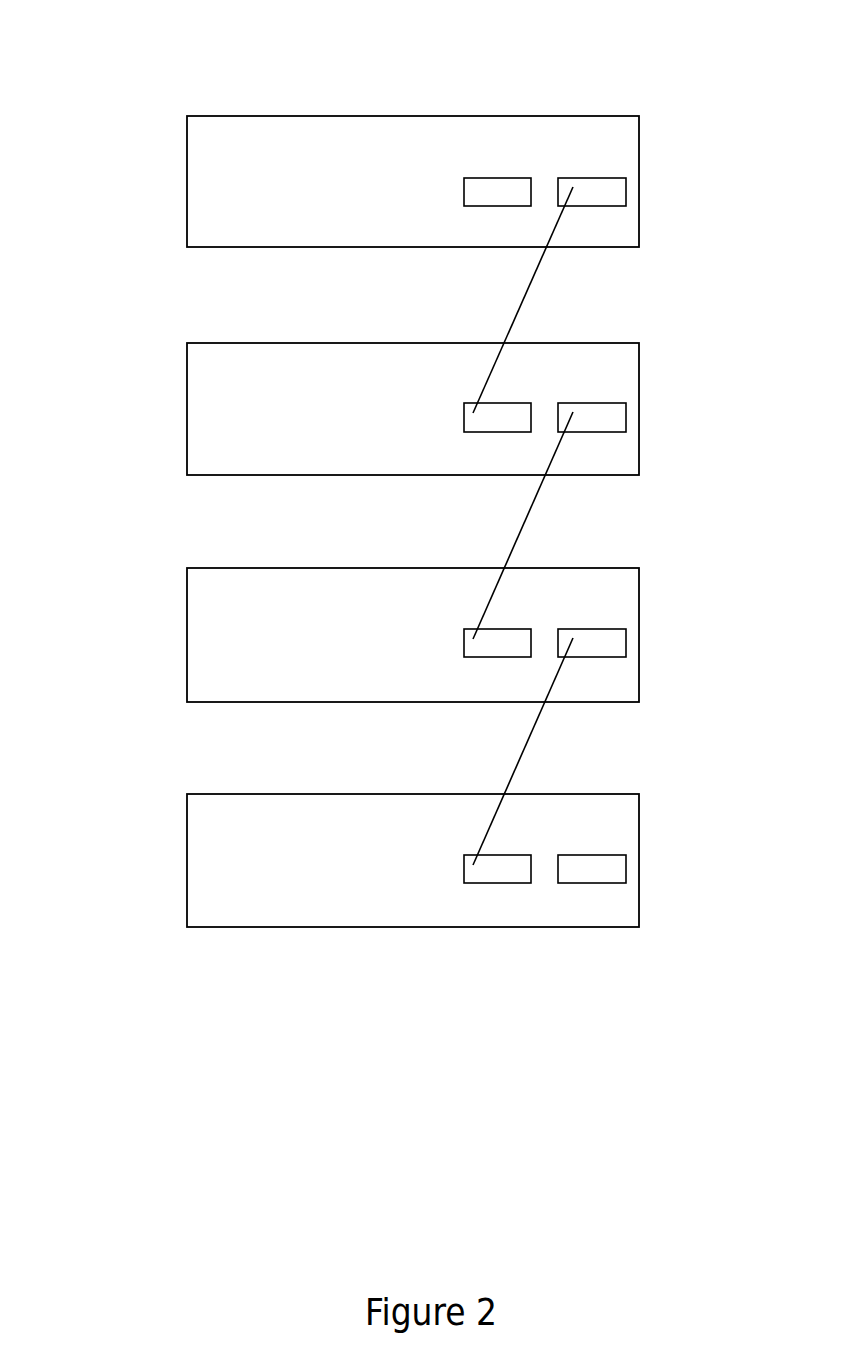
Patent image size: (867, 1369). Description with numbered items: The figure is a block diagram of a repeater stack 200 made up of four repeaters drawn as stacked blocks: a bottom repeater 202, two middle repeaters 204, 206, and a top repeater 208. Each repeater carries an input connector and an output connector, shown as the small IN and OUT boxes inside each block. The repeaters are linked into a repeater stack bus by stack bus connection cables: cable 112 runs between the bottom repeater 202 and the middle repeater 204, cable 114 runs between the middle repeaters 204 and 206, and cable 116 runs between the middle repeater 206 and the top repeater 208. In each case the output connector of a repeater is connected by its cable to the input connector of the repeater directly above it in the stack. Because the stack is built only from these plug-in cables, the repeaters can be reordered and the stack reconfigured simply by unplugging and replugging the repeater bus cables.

The repeater stack 200 is at (153, 46).
The bottom repeater 202 is at (640, 851).
The middle repeater 204 is at (640, 625).
The middle repeater 206 is at (640, 400).
The top repeater 208 is at (640, 173).
The connection cable from OUT of 202 to IN of 204 112 is at (531, 738).
The connection cable from OUT of 204 to IN of 206 114 is at (531, 510).
The connection cable from OUT of 206 to IN of 208 116 is at (531, 285).